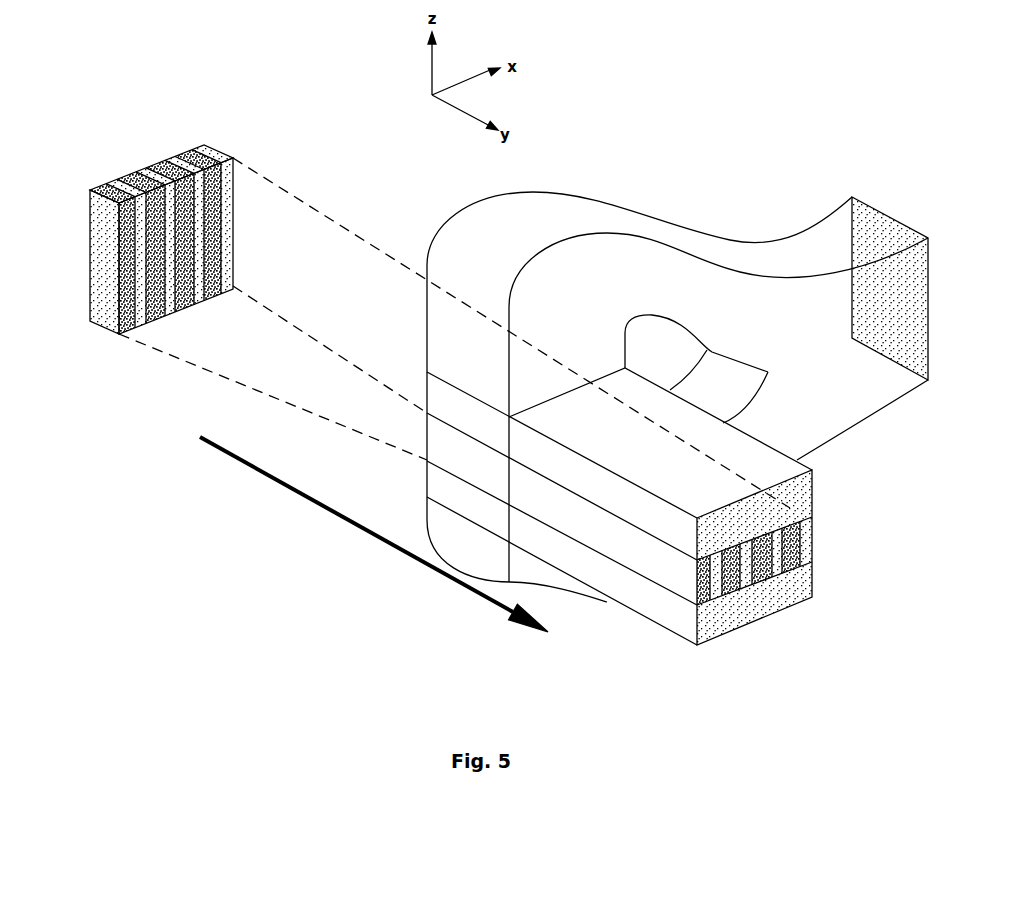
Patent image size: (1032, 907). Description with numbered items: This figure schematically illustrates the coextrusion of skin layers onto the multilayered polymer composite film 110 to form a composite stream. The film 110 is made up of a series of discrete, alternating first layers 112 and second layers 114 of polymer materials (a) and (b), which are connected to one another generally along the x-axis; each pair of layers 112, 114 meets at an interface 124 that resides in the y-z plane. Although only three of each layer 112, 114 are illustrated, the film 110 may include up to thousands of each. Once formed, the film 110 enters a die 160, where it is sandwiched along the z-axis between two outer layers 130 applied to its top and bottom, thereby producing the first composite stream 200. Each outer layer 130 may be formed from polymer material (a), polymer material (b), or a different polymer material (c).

The multilayered polymer composite film 110 is at (82, 260).
The first layer 112 is at (90, 190).
The second layer 114 is at (153, 181).
The interface 124 is at (123, 181).
The outer layer 130 is at (882, 232).
The die 160 is at (693, 212).
The first composite stream 200 is at (764, 634).